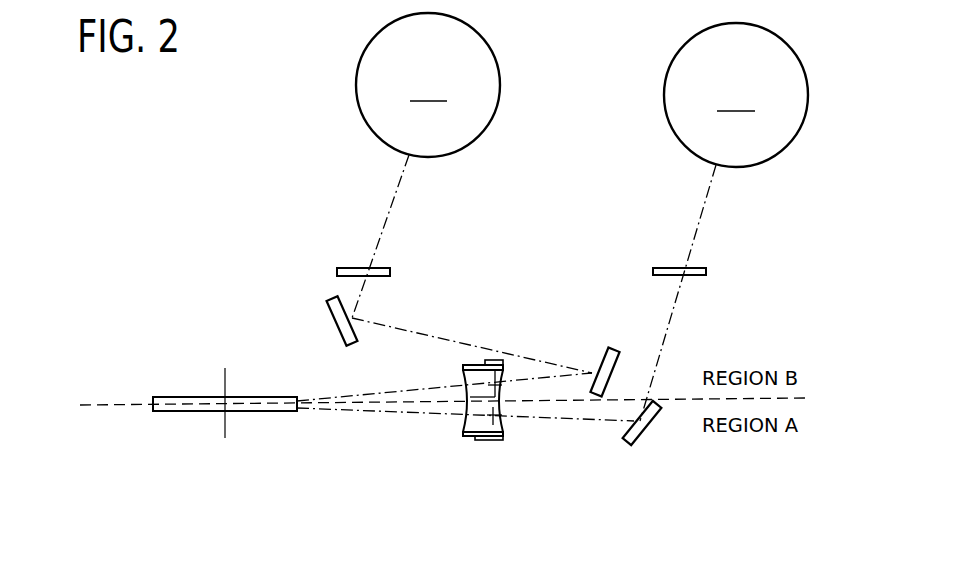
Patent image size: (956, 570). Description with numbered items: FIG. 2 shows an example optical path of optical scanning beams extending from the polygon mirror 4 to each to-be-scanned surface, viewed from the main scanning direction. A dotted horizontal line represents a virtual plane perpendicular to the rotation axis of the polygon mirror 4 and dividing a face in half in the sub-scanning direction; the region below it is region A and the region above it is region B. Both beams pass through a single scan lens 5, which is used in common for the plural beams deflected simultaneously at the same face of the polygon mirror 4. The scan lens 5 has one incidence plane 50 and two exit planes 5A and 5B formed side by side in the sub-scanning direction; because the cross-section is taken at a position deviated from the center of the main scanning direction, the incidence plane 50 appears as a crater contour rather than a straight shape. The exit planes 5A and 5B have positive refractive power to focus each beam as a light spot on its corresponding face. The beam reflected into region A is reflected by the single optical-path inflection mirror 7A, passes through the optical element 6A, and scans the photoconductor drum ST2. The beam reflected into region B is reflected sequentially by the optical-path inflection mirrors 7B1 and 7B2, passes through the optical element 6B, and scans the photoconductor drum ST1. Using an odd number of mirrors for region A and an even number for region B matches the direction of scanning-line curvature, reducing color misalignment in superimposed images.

The polygon mirror 4 is at (254, 412).
The scan lens 5 is at (486, 405).
The exit plane 5A is at (506, 425).
The exit plane 5B is at (506, 378).
The incidence plane 50 is at (466, 380).
The optical element 6A is at (700, 266).
The optical element 6B is at (378, 266).
The optical-path inflection mirror 7A is at (646, 425).
The optical-path inflection mirror 7B1 is at (609, 349).
The optical-path inflection mirror 7B2 is at (337, 322).
The photoconductor drum ST1 is at (428, 85).
The photoconductor drum ST2 is at (736, 95).